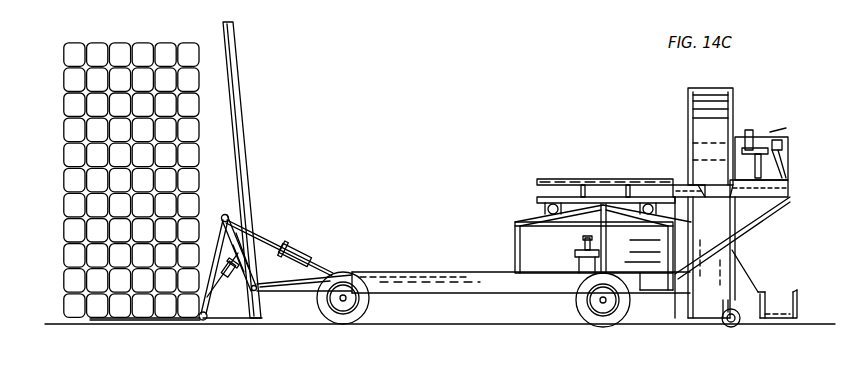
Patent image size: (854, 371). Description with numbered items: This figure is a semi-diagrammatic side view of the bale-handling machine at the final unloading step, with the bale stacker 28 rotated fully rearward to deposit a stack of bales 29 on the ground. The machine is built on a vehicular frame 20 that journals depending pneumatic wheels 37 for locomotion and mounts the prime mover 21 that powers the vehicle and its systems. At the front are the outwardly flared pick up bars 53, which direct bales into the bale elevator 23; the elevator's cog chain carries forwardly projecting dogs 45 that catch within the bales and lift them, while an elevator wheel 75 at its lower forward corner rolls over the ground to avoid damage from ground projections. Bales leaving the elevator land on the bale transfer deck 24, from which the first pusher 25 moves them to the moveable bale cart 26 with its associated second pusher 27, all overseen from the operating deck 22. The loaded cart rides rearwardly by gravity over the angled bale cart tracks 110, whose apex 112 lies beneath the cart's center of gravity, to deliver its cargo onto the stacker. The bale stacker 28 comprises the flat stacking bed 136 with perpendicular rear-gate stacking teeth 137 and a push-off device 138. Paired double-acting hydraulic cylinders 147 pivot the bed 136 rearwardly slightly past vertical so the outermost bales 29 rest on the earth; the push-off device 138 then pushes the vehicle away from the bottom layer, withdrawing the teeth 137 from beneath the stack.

The bales 29 is at (170, 41).
The stacking teeth 137 is at (120, 322).
The stacking bed 136 is at (240, 86).
The bale stacker 28 is at (232, 211).
The push-off device 138 is at (237, 282).
The double-acting hydraulic cylinders 147 is at (304, 258).
The vehicular frame 20 is at (474, 282).
The pneumatic wheels 37 is at (368, 299).
The bale cart tracks 110 is at (537, 218).
The apex 112 is at (600, 208).
The bale cart 26 is at (610, 200).
The second pusher 27 is at (597, 181).
The prime mover 21 is at (592, 268).
The dogs 45 is at (700, 113).
The bale transfer deck 24 is at (708, 194).
The operating deck 22 is at (772, 178).
The first pusher 25 is at (742, 201).
The bale elevator 23 is at (716, 272).
The elevator wheel 75 is at (738, 323).
The pick up bars 53 is at (797, 292).